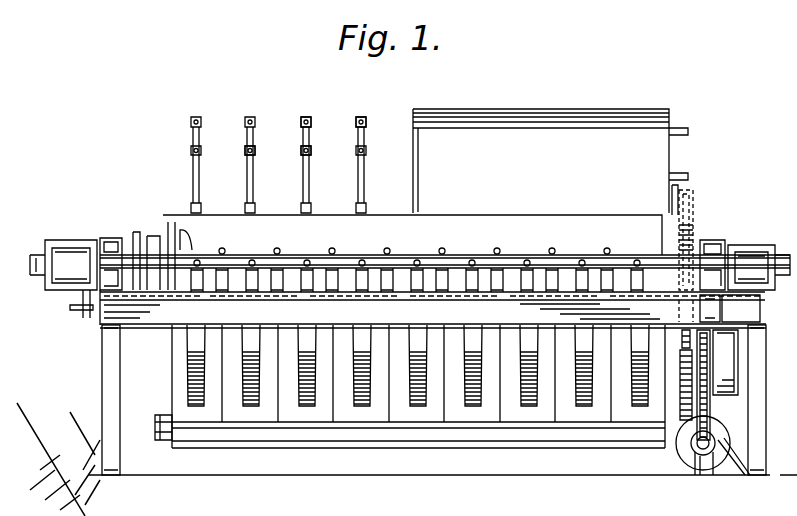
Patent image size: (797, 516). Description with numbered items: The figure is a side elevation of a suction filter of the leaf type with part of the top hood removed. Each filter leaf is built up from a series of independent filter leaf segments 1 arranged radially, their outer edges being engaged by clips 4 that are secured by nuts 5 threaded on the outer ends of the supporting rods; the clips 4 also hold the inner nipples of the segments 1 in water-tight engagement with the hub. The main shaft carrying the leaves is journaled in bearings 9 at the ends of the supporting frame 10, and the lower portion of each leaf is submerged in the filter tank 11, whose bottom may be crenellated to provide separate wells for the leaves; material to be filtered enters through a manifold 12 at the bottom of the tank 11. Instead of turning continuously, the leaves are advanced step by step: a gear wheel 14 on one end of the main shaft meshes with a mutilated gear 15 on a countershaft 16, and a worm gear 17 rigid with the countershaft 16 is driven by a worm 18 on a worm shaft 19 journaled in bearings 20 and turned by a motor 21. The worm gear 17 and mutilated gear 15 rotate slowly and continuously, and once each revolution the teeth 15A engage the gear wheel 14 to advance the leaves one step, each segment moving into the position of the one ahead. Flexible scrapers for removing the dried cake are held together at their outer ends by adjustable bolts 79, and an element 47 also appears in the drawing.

The filter leaf segments 1 is at (246, 183).
The clips 4 is at (303, 152).
The nuts 5 is at (360, 118).
The bearings 9 is at (113, 237).
The supporting frame 10 is at (102, 382).
The filter tank 11 is at (176, 379).
The manifold 12 is at (158, 437).
The gear wheel 14 is at (693, 224).
The mutilated gear 15 is at (690, 356).
The teeth of the mutilated gear 15A is at (692, 410).
The countershaft 16 is at (740, 383).
The worm gear 17 is at (712, 417).
The worm 18 is at (708, 450).
The worm shaft 19 is at (697, 446).
The bearings 20 is at (697, 456).
The motor 21 is at (722, 450).
The motors 47 is at (88, 240).
The bolts 79 is at (750, 312).